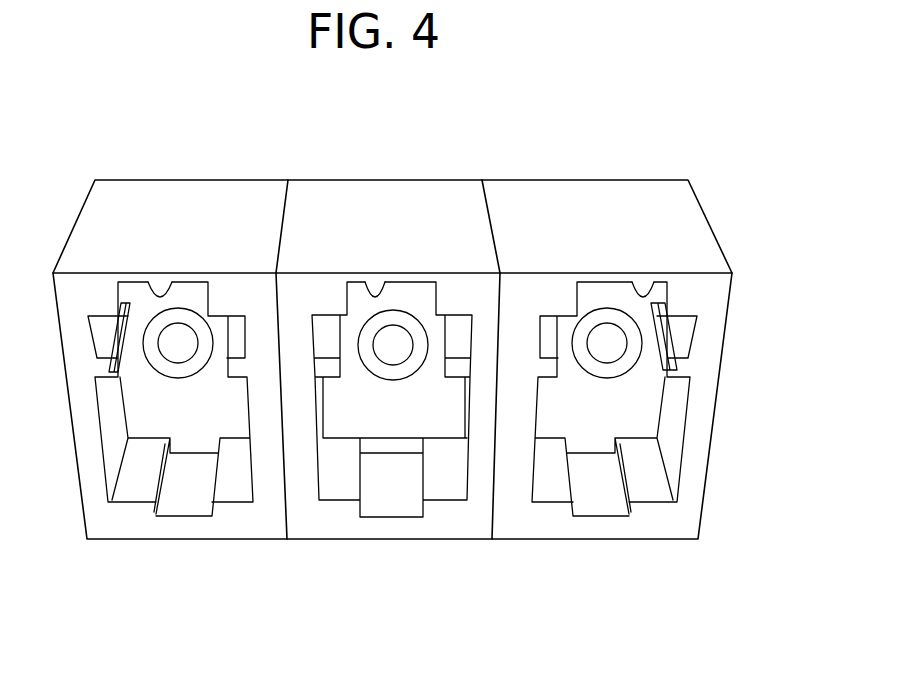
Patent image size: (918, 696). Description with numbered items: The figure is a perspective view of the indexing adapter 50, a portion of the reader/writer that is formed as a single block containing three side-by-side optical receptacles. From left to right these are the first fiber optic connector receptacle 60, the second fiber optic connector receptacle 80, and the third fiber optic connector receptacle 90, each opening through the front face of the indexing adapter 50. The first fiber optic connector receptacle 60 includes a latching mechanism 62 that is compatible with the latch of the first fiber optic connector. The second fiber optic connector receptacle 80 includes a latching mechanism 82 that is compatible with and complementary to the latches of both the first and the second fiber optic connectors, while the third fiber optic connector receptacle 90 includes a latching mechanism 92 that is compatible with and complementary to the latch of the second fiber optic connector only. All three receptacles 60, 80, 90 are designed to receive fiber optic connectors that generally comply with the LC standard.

The indexing adapter 50 is at (698, 195).
The first fiber optic connector receptacle 60 is at (108, 415).
The latching mechanism 62 is at (163, 294).
The second fiber optic connector receptacle 80 is at (470, 413).
The latching mechanism 82 is at (378, 294).
The third fiber optic connector receptacle 90 is at (675, 413).
The latching mechanism 92 is at (650, 295).